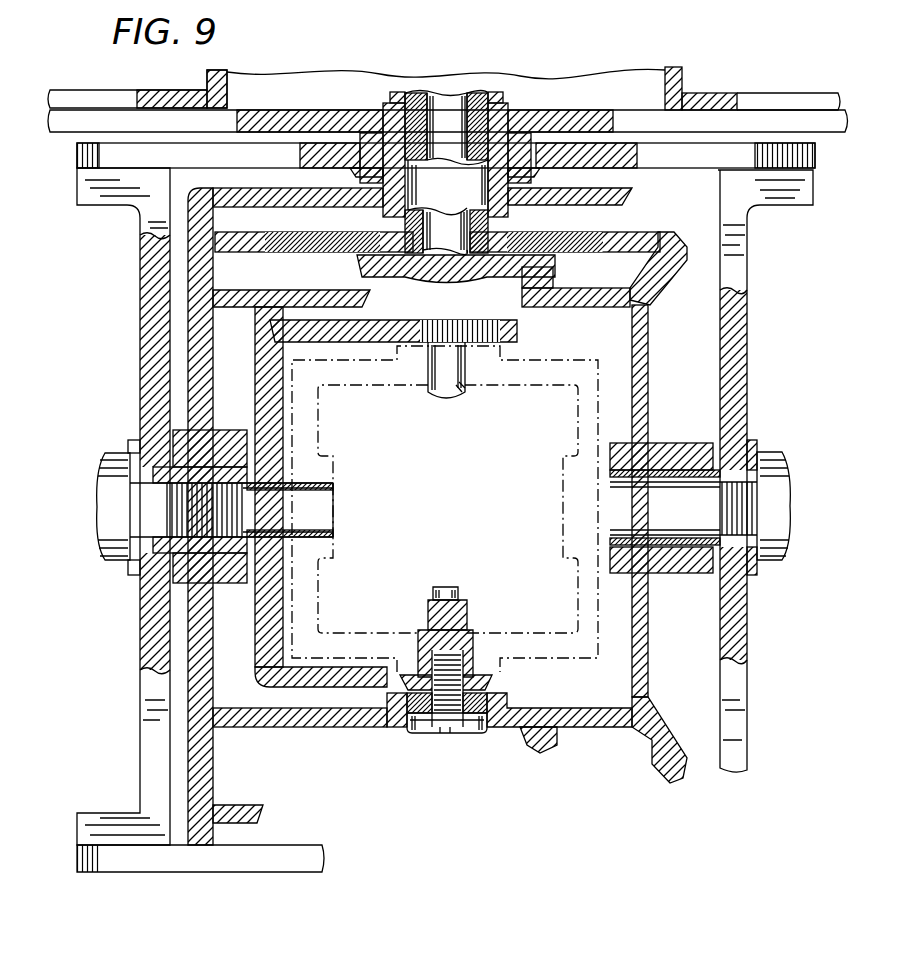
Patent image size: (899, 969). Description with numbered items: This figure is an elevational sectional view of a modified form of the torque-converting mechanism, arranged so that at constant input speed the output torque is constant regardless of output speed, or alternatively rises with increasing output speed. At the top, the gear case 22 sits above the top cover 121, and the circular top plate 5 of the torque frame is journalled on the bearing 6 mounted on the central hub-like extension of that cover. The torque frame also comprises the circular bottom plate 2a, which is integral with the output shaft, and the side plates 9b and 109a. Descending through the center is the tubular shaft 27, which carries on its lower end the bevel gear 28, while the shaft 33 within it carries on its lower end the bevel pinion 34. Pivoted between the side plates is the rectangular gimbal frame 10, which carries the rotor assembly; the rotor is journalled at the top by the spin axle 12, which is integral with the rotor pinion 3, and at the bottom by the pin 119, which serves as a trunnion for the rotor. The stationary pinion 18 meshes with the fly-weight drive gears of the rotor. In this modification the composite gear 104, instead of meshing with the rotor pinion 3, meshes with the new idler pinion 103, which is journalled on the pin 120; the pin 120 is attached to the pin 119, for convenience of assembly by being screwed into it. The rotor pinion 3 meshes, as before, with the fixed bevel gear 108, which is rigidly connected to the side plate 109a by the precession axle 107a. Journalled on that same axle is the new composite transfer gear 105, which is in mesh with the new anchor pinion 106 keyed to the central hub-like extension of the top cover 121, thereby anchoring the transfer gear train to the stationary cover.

The circular bottom plate 2a is at (278, 873).
The rotor pinion 3 is at (470, 322).
The circular top plate 5 is at (80, 152).
The bearing 6 is at (548, 140).
The side plate 9b is at (740, 746).
The gimbal frame 10 is at (563, 355).
The spin axle 12 is at (456, 398).
The stationary pinion 18 is at (466, 618).
The gear case 22 is at (688, 76).
The tubular shaft 27 is at (410, 93).
The bevel gear 28 is at (267, 244).
The shaft 33 is at (460, 94).
The bevel pinion 34 is at (357, 267).
The idler pinion 103 is at (504, 732).
The composite gear 104 is at (640, 363).
The composite transfer gear 105 is at (264, 813).
The anchor pinion 106 is at (628, 197).
The precession axle 107a is at (97, 472).
The fixed bevel gear 108 is at (251, 378).
The side plate 109a is at (143, 772).
The pin 119 is at (494, 681).
The pin 120 is at (425, 734).
The top cover 121 is at (72, 120).